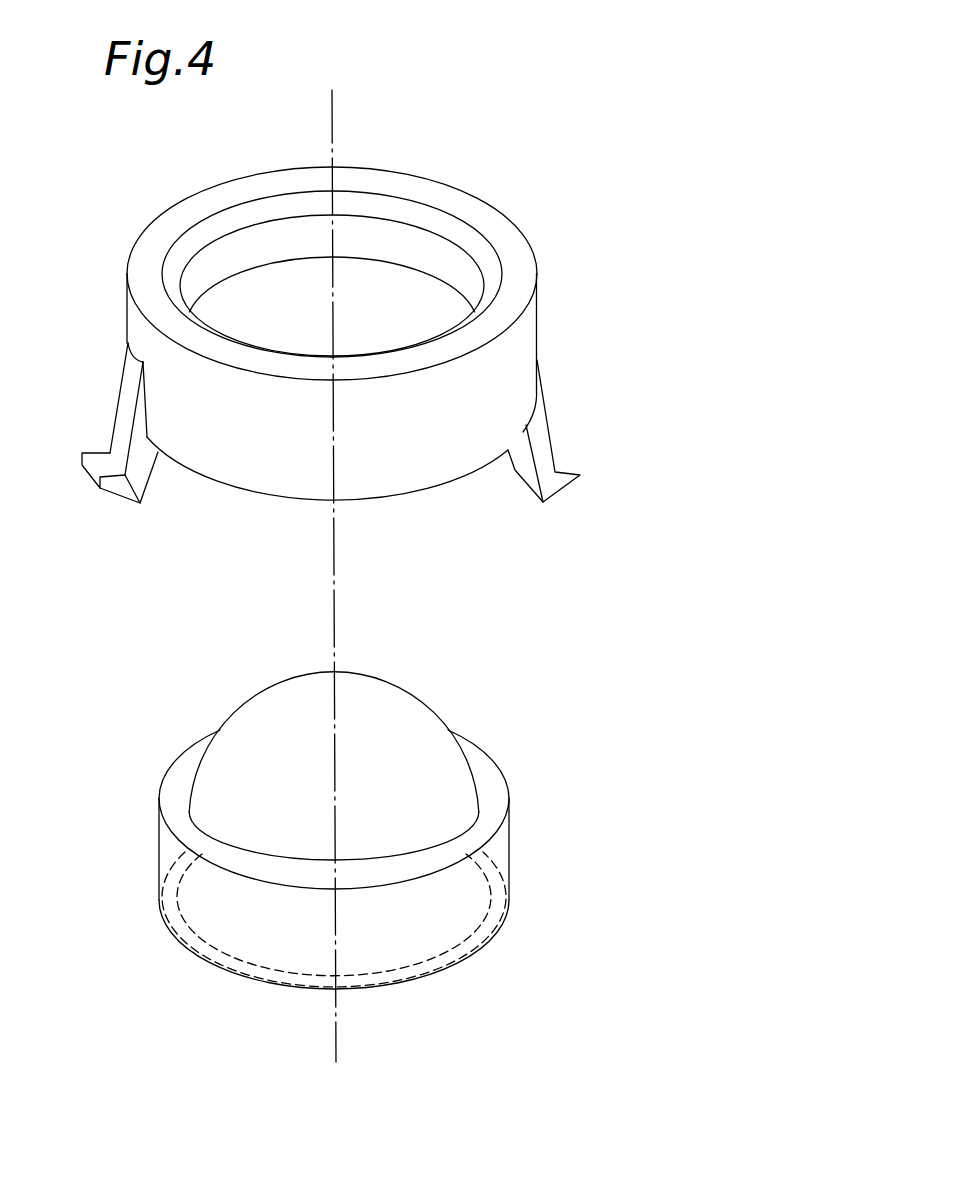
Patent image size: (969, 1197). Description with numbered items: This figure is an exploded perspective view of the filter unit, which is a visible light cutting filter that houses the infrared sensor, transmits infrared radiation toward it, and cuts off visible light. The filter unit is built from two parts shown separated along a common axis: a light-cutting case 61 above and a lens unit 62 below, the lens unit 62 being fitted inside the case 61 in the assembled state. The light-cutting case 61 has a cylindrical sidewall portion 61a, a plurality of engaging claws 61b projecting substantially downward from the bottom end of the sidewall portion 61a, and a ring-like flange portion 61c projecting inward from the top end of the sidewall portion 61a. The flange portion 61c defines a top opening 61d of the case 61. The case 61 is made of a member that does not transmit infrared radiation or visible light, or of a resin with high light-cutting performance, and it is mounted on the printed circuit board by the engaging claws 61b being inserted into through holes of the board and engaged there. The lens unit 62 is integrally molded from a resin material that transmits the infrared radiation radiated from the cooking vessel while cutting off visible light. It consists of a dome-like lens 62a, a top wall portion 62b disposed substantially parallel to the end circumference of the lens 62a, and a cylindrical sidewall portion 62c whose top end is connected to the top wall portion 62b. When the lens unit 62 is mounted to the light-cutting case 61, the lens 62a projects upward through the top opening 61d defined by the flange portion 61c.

The light-cutting case 61 is at (126, 218).
The cylindrical sidewall portion 61a is at (487, 373).
The engaging claws 61b is at (542, 462).
The flange portion 61c is at (493, 225).
The top opening 61d is at (383, 260).
The lens unit 62 is at (178, 718).
The lens 62a is at (387, 716).
The top wall portion 62b is at (490, 787).
The cylindrical sidewall portion 62c is at (497, 847).